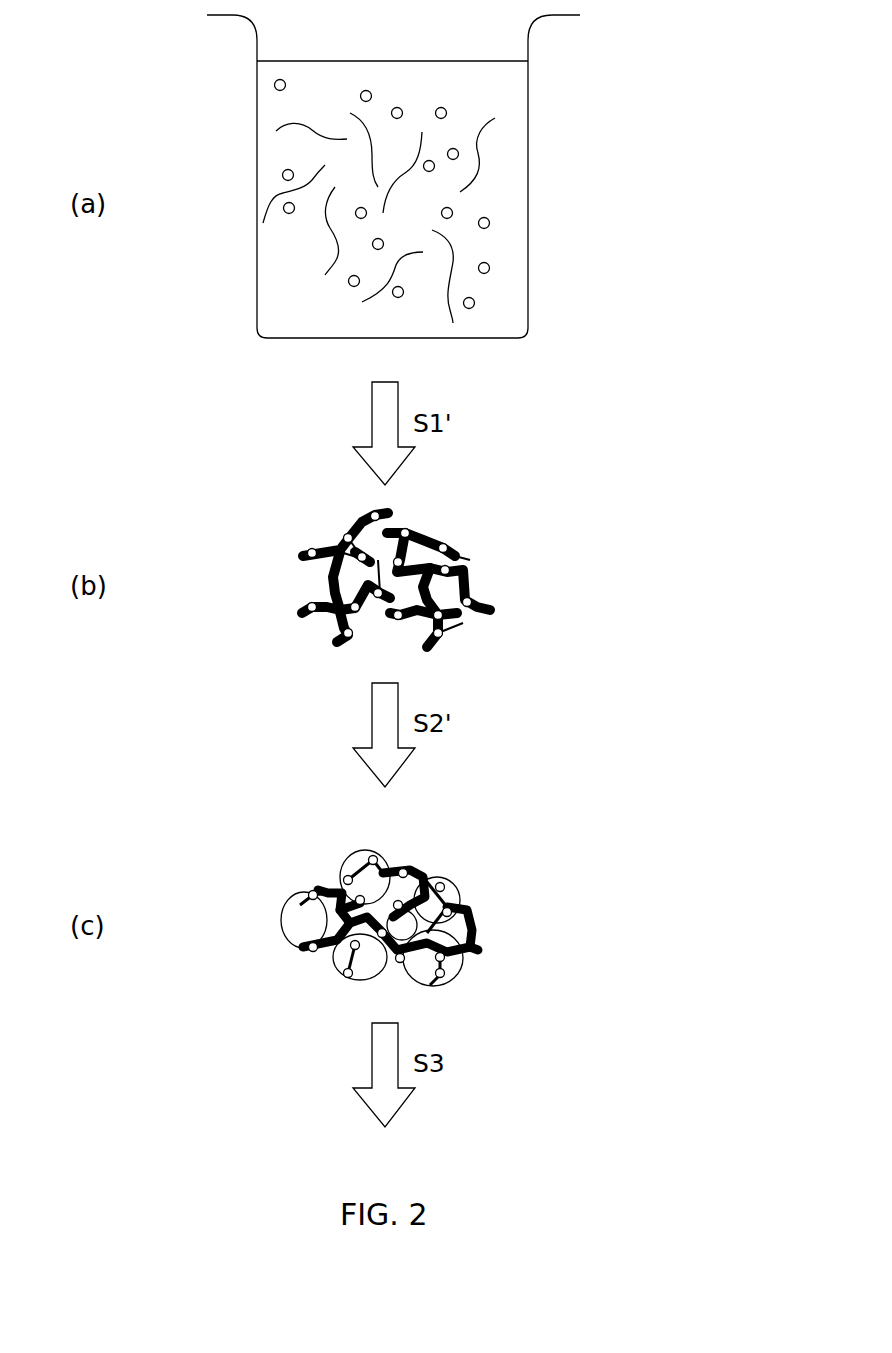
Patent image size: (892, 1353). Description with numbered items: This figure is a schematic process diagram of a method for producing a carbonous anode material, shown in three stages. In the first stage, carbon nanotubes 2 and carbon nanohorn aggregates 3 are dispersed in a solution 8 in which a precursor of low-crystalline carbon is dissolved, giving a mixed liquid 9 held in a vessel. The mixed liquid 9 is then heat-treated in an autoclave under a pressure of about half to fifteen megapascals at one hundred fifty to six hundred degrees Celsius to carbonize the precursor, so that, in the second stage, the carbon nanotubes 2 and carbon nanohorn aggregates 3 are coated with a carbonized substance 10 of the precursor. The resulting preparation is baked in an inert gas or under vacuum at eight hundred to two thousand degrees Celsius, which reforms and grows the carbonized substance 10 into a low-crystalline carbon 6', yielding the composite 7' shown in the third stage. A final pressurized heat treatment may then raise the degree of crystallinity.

The carbon nanotubes 2 is at (484, 149).
The carbon nanohorn aggregates 3 is at (494, 221).
The solution 8 is at (500, 288).
The mixed liquid 9 is at (636, 68).
The carbonized substance 10 is at (458, 553).
The low-crystalline carbon 6' is at (441, 910).
The composite 7' is at (495, 921).